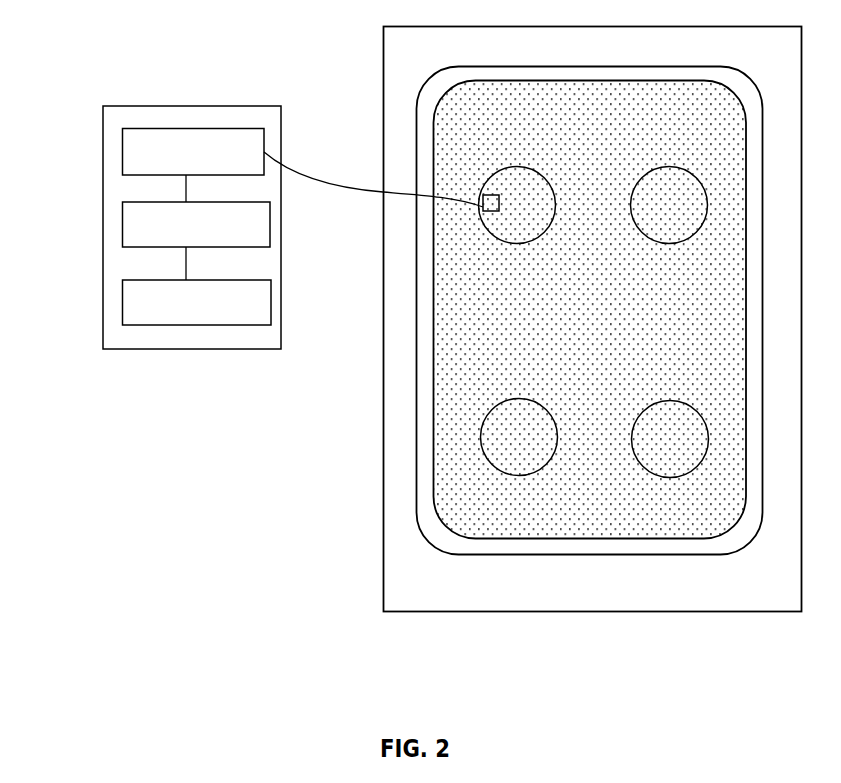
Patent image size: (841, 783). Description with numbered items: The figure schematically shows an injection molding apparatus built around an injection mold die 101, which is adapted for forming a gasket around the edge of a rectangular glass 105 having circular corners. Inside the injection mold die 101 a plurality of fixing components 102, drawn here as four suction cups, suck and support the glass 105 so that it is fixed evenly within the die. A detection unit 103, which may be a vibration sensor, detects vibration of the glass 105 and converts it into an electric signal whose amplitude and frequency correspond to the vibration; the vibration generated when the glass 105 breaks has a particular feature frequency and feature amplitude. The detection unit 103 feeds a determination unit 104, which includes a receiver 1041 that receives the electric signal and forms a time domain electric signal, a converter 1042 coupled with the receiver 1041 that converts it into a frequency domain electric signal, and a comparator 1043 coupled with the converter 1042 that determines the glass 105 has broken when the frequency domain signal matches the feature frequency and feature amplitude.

The injection mold die 101 is at (430, 583).
The fixing components 102 is at (493, 442).
The detection unit 103 is at (483, 196).
The determination unit 104 is at (252, 264).
The glass 105 is at (493, 303).
The receiver 1041 is at (122, 158).
The converter 1042 is at (122, 222).
The comparator 1043 is at (122, 300).